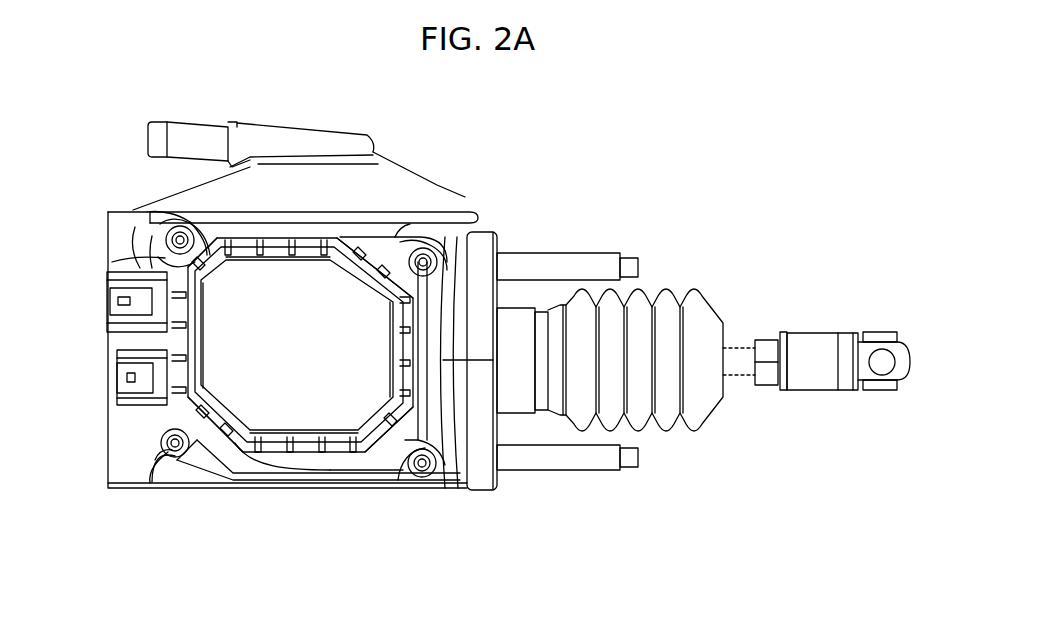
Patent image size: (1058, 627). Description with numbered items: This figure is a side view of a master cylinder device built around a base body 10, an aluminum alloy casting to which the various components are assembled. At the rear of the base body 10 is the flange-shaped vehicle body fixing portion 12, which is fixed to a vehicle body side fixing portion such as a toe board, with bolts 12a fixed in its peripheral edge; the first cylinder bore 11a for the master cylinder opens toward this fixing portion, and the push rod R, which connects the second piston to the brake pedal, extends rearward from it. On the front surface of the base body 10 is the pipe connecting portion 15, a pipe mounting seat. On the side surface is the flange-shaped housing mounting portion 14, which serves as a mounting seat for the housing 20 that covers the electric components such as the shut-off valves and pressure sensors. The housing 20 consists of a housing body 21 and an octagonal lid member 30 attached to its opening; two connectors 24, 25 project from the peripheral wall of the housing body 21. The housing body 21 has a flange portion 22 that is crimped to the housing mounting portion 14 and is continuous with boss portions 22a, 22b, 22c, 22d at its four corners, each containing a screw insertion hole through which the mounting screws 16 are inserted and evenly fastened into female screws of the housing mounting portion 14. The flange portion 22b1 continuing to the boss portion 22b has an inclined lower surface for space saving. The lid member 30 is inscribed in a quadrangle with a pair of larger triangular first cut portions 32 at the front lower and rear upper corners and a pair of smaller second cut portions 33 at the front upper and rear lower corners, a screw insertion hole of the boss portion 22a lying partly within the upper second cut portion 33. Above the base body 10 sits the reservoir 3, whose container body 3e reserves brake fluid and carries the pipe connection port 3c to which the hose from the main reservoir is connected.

The base body 10 is at (104, 208).
The reservoir 3 is at (382, 157).
The pipe connection port 3c is at (257, 126).
The container body 3e is at (403, 168).
The housing 20 is at (270, 236).
The lid member 30 is at (331, 293).
The first cut portions 32 is at (382, 235).
The flange portion 22 is at (323, 468).
The boss portion 22a is at (156, 222).
The boss portion 22b is at (152, 467).
The flange portion 22b1 is at (207, 476).
The boss portion 22c is at (440, 478).
The boss portion 22d is at (450, 253).
The housing body 21 is at (272, 452).
The mounting screws 16 is at (181, 232).
The second cut portions 33 is at (168, 262).
The connector 24 is at (110, 300).
The connector 25 is at (120, 375).
The housing mounting portion 14 is at (183, 472).
The pipe connecting portion 15 is at (106, 448).
The vehicle body fixing portion 12 is at (498, 240).
The bolts 12a is at (602, 262).
The first cylinder bore 11a is at (513, 398).
The push rod R is at (740, 350).